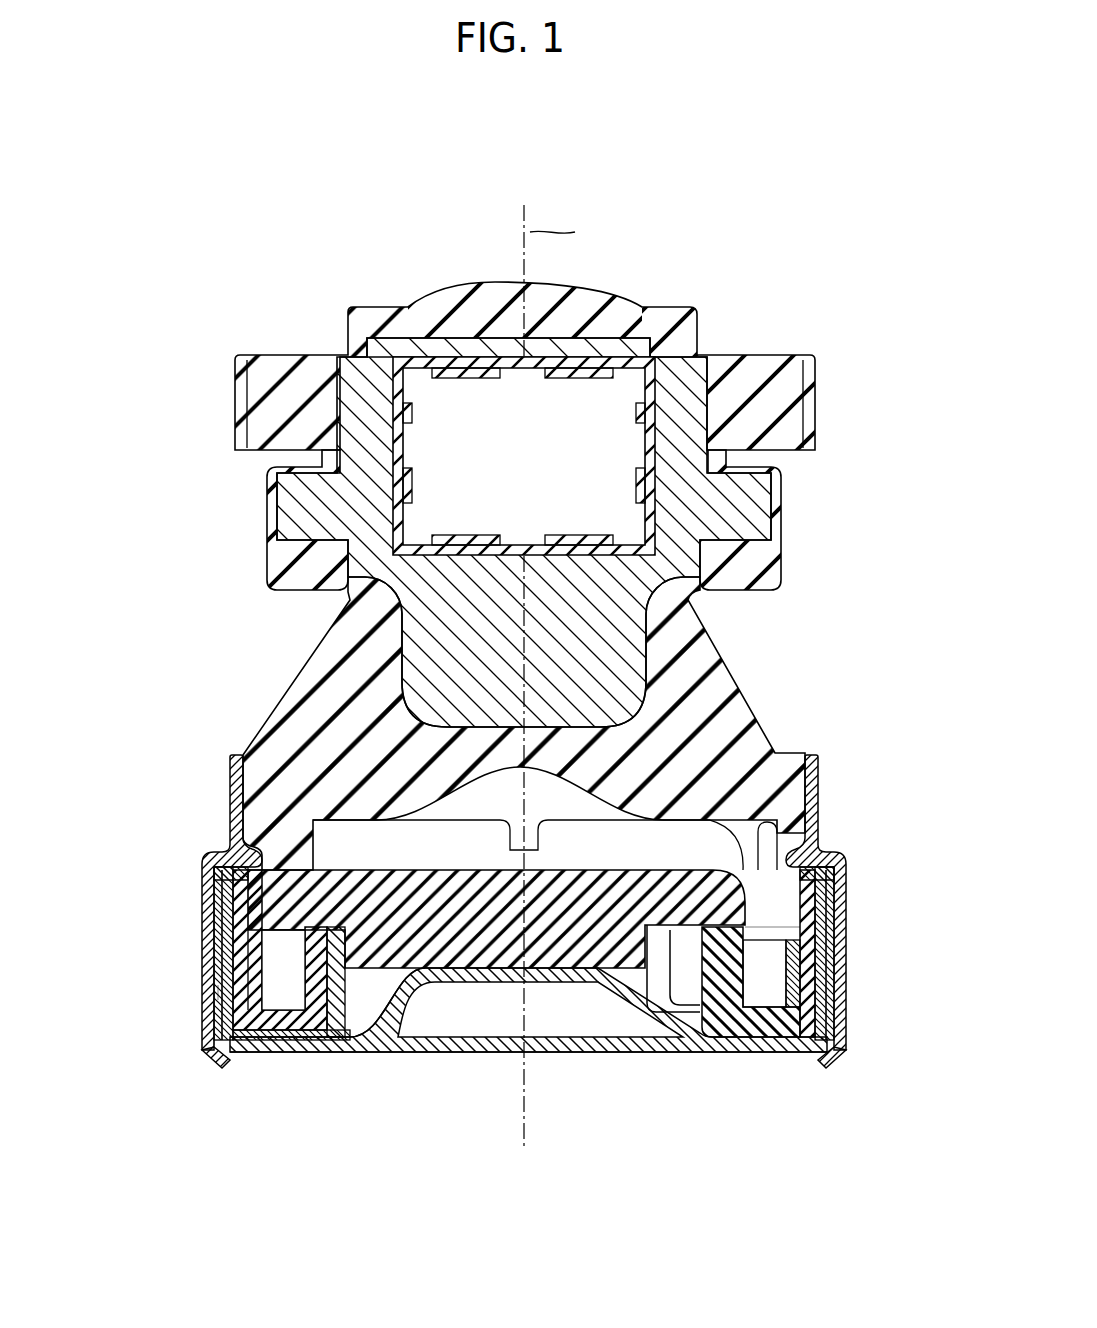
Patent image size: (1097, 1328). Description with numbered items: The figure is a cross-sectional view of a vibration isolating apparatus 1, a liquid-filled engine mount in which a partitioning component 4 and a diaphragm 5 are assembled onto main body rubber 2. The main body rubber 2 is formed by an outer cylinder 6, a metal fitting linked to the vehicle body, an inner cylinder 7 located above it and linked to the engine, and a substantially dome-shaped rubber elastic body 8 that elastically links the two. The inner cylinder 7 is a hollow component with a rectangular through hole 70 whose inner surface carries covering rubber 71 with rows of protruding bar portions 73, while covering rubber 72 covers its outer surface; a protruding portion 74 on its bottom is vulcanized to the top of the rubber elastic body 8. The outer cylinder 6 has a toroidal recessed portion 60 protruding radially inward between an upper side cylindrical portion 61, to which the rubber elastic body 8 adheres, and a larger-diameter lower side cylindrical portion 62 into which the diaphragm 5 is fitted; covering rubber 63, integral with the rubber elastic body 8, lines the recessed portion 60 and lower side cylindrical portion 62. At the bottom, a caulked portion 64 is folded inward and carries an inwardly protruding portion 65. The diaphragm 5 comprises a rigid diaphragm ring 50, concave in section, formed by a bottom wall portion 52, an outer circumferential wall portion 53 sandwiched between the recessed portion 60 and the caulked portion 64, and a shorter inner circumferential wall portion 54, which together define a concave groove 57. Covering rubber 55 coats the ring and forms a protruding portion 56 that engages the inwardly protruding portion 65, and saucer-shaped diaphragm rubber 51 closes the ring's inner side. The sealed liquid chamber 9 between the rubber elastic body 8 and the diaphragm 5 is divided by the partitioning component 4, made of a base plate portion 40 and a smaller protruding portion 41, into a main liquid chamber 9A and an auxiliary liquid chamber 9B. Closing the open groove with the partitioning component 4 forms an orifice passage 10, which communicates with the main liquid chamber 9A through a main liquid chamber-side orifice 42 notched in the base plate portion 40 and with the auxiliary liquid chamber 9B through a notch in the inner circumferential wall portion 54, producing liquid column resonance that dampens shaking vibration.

The vibration isolating apparatus 1 is at (506, 649).
The main body rubber 2 is at (577, 700).
The partitioning component 4 is at (528, 1088).
The diaphragm 5 is at (367, 1052).
The outer cylinder 6 is at (506, 944).
The inner cylinder 7 is at (688, 333).
The rubber elastic body 8 is at (743, 684).
The liquid chamber 9 is at (545, 1016).
The main liquid chamber 9A is at (587, 860).
The auxiliary liquid chamber 9B is at (655, 985).
The orifice passage 10 is at (300, 990).
The base plate portion 40 is at (320, 870).
The protruding portion 41 is at (672, 990).
The main liquid chamber-side orifice 42 is at (782, 905).
The diaphragm ring 50 is at (447, 1039).
The diaphragm rubber 51 is at (445, 1005).
The bottom wall portion 52 is at (265, 1038).
The outer circumferential wall portion 53 is at (217, 873).
The inner circumferential wall portion 54 is at (350, 1035).
The covering rubber 55 is at (220, 977).
The protruding portion 56 is at (220, 1040).
The concave groove 57 is at (223, 993).
The recessed portion 60 is at (480, 982).
The upper side cylindrical portion 61 is at (230, 776).
The lower side cylindrical portion 62 is at (208, 937).
The covering rubber 63 is at (217, 908).
The caulked portion 64 is at (207, 1050).
The inwardly protruding portion 65 is at (218, 1060).
The through hole 70 is at (452, 468).
The covering rubber 71 is at (637, 357).
The covering rubber 72 is at (663, 318).
The protruding bar portions 73 is at (500, 378).
The protruding portion 74 is at (408, 622).